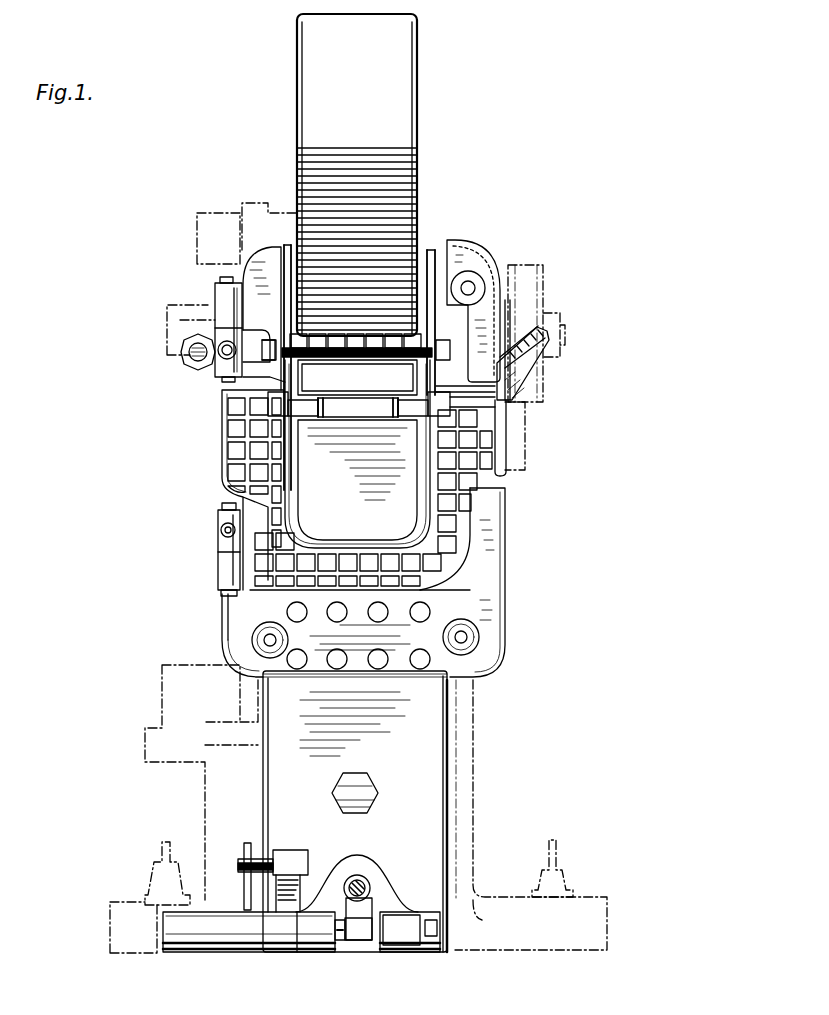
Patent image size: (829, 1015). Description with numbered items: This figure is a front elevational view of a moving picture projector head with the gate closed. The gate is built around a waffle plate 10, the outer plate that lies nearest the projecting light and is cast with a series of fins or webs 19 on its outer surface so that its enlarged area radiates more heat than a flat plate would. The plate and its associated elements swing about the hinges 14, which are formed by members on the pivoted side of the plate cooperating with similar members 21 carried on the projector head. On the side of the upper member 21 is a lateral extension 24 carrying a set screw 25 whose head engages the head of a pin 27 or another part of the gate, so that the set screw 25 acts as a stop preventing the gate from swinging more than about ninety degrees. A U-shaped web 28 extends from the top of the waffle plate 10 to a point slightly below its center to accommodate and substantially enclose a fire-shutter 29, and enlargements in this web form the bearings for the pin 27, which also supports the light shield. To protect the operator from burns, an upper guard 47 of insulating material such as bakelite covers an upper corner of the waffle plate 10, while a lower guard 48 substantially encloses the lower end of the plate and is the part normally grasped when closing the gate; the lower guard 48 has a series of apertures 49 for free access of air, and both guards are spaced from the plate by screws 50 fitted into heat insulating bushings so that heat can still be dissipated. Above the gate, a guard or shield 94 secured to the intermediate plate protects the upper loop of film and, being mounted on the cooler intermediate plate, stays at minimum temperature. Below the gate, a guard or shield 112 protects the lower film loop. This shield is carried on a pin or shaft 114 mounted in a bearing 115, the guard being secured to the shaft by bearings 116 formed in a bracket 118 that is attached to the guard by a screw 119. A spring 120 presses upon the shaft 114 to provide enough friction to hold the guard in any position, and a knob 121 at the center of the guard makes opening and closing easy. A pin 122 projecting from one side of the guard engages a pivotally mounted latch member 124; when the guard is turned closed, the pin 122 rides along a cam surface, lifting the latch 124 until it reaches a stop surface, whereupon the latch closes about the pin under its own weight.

The waffle plate 10 is at (500, 480).
The hinges 14 is at (215, 297).
The fins or webs 19 is at (228, 453).
The members 21 is at (226, 372).
The lateral extension 24 is at (222, 360).
The set screw 25 is at (190, 362).
The pin 27 is at (278, 305).
The U-shaped web 28 is at (250, 478).
The fire-shutter 29 is at (357, 454).
The upper guard 47 is at (478, 254).
The lower guard 48 is at (495, 592).
The apertures 49 is at (430, 606).
The screws 50 is at (482, 640).
The guard or shield 94 is at (297, 103).
The guard or shield 112 is at (428, 744).
The pin or shaft 114 is at (348, 942).
The bearing 115 is at (290, 936).
The bearings 116 is at (305, 952).
The bracket 118 is at (378, 880).
The screw 119 is at (360, 872).
The spring 120 is at (372, 905).
The knob 121 is at (357, 780).
The pin 122 is at (275, 856).
The latch member 124 is at (244, 855).